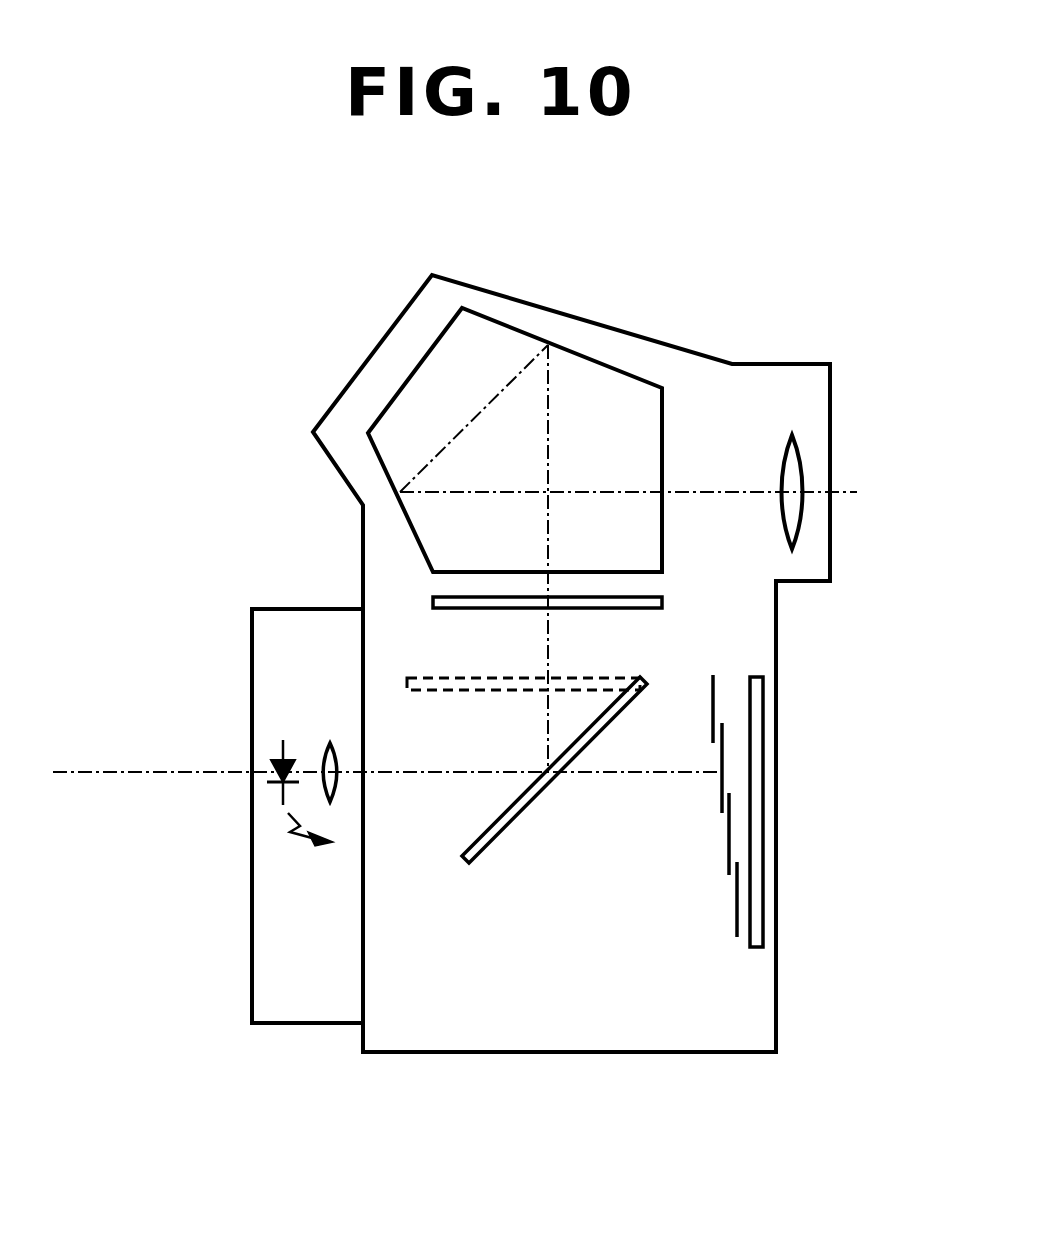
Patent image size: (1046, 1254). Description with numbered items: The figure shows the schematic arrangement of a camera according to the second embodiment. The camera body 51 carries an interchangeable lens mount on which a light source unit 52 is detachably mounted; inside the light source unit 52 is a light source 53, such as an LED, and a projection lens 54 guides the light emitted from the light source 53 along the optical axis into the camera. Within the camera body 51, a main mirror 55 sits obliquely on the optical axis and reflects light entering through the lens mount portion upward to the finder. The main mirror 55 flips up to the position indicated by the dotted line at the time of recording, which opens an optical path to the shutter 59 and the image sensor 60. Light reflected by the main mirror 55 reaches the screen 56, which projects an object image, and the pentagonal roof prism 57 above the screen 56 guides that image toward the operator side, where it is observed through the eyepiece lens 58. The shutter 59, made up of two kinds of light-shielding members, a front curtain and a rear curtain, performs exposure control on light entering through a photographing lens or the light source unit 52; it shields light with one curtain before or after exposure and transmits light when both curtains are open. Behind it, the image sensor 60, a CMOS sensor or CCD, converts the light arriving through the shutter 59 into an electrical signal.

The camera body 51 is at (395, 325).
The light source unit 52 is at (270, 606).
The light source 53 is at (280, 766).
The projection lens 54 is at (327, 743).
The main mirror 55 is at (498, 837).
The screen 56 is at (433, 597).
The pentagonal roof prism 57 is at (385, 407).
The eyepiece lens 58 is at (803, 452).
The shutter 59 is at (713, 680).
The image sensor 60 is at (763, 770).